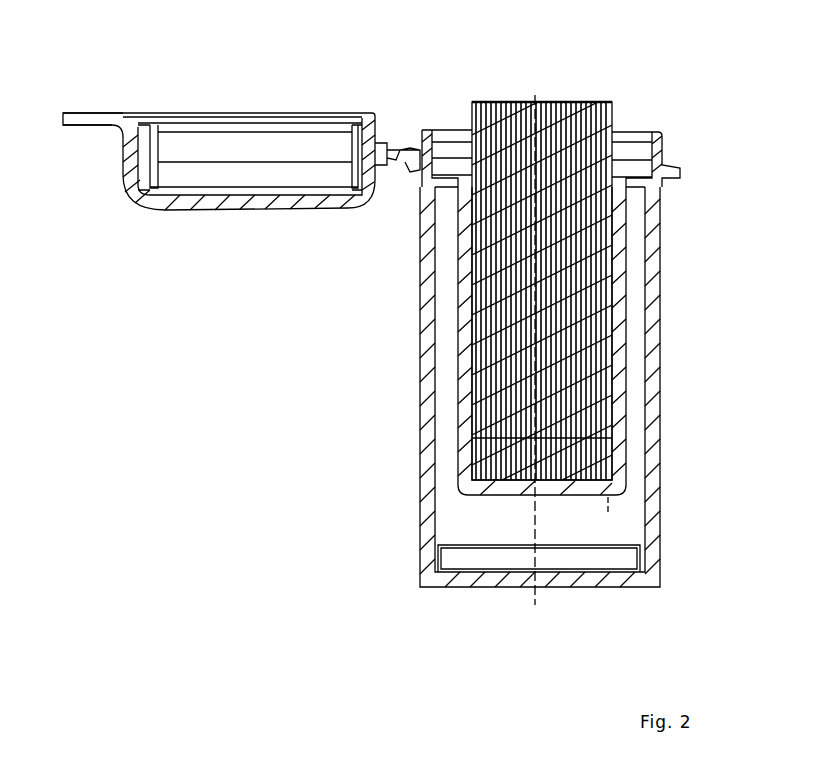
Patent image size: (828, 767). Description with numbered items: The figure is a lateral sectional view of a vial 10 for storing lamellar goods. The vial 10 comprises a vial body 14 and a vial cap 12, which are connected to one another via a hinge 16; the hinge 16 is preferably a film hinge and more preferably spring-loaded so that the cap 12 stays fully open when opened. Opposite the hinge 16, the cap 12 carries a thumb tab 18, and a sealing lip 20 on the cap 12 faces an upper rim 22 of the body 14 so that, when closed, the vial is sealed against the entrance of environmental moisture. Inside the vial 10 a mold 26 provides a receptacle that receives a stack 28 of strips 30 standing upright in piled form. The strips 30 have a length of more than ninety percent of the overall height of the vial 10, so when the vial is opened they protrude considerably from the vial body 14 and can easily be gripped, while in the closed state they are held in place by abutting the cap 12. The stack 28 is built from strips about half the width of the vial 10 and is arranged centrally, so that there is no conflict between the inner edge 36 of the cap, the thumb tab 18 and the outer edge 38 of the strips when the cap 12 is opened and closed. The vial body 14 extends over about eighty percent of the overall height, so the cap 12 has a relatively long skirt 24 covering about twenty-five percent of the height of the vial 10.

The vial 10 is at (368, 645).
The vial cap 12 is at (185, 210).
The vial body 14 is at (452, 495).
The hinge 16 is at (405, 125).
The thumb tab 18 is at (62, 125).
The sealing lip 20 is at (148, 128).
The upper rim 22 is at (665, 133).
The skirt 24 is at (358, 142).
The mold 26 is at (612, 460).
The stack 28 is at (483, 363).
The strips 30 is at (597, 298).
The inner edge of the cap 36 is at (156, 128).
The outer edge of the strips 38 is at (650, 30).